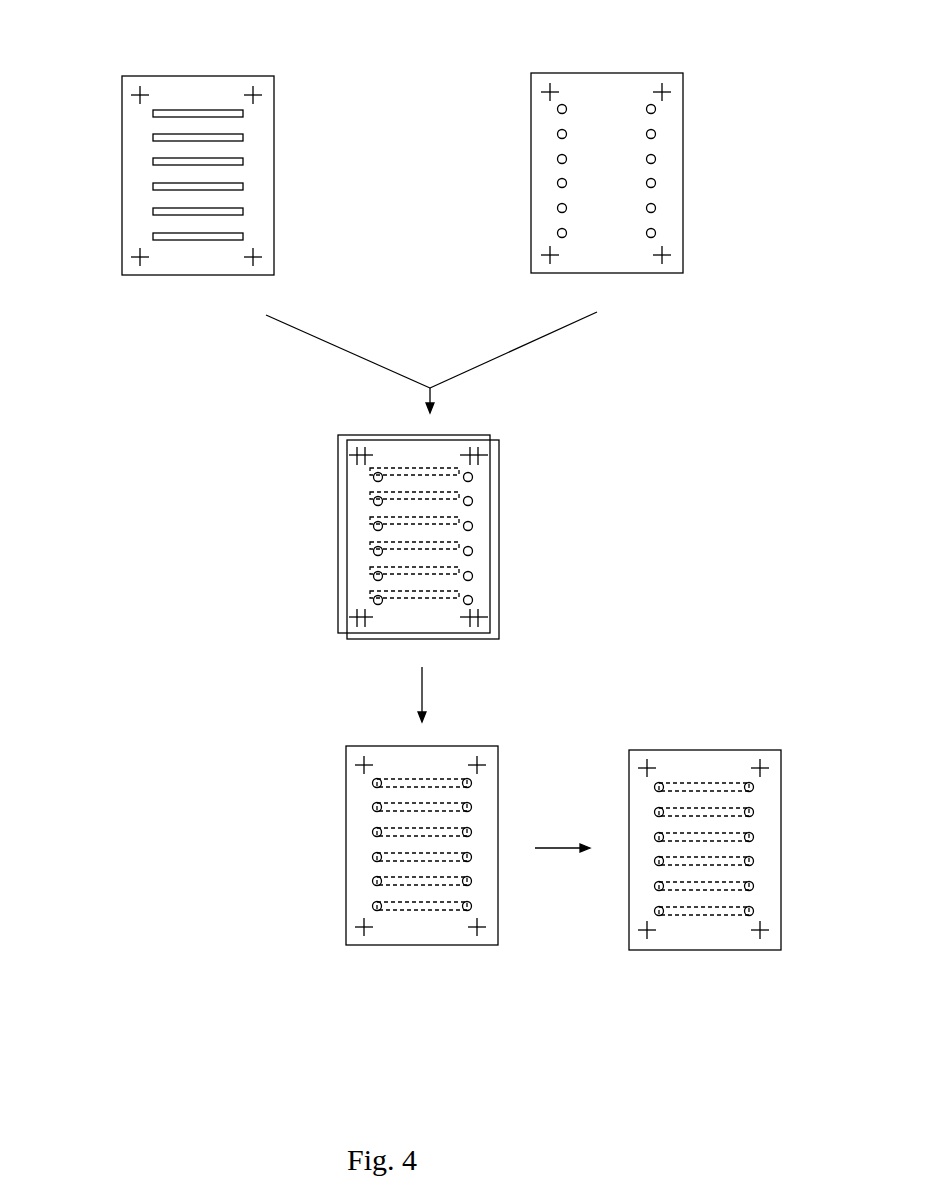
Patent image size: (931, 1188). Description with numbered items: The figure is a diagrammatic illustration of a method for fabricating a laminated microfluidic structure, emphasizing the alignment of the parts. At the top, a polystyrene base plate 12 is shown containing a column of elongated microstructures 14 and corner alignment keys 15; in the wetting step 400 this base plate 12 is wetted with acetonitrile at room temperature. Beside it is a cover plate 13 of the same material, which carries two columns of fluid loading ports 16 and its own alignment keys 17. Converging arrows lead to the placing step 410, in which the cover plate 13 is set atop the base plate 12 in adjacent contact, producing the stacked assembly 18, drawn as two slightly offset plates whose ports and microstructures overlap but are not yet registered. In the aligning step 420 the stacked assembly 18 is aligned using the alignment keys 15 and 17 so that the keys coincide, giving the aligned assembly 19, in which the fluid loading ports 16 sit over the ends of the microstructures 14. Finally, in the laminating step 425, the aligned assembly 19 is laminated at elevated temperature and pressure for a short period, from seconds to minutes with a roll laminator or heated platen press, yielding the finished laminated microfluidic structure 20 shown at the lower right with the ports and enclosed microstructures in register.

The polystyrene base plate 12 is at (115, 83).
The cover plate 13 is at (513, 82).
The microstructures 14 is at (251, 165).
The alignment keys 15 is at (133, 265).
The fluid loading ports 16 is at (663, 184).
The alignment keys 17 is at (673, 265).
The stacked assembly 18 is at (513, 570).
The aligned assembly 19 is at (508, 960).
The laminated microfluidic structure 20 is at (773, 968).
The wetting step 400 is at (52, 159).
The placing step 410 is at (431, 363).
The aligning step 420 is at (348, 769).
The laminating step 425 is at (682, 847).